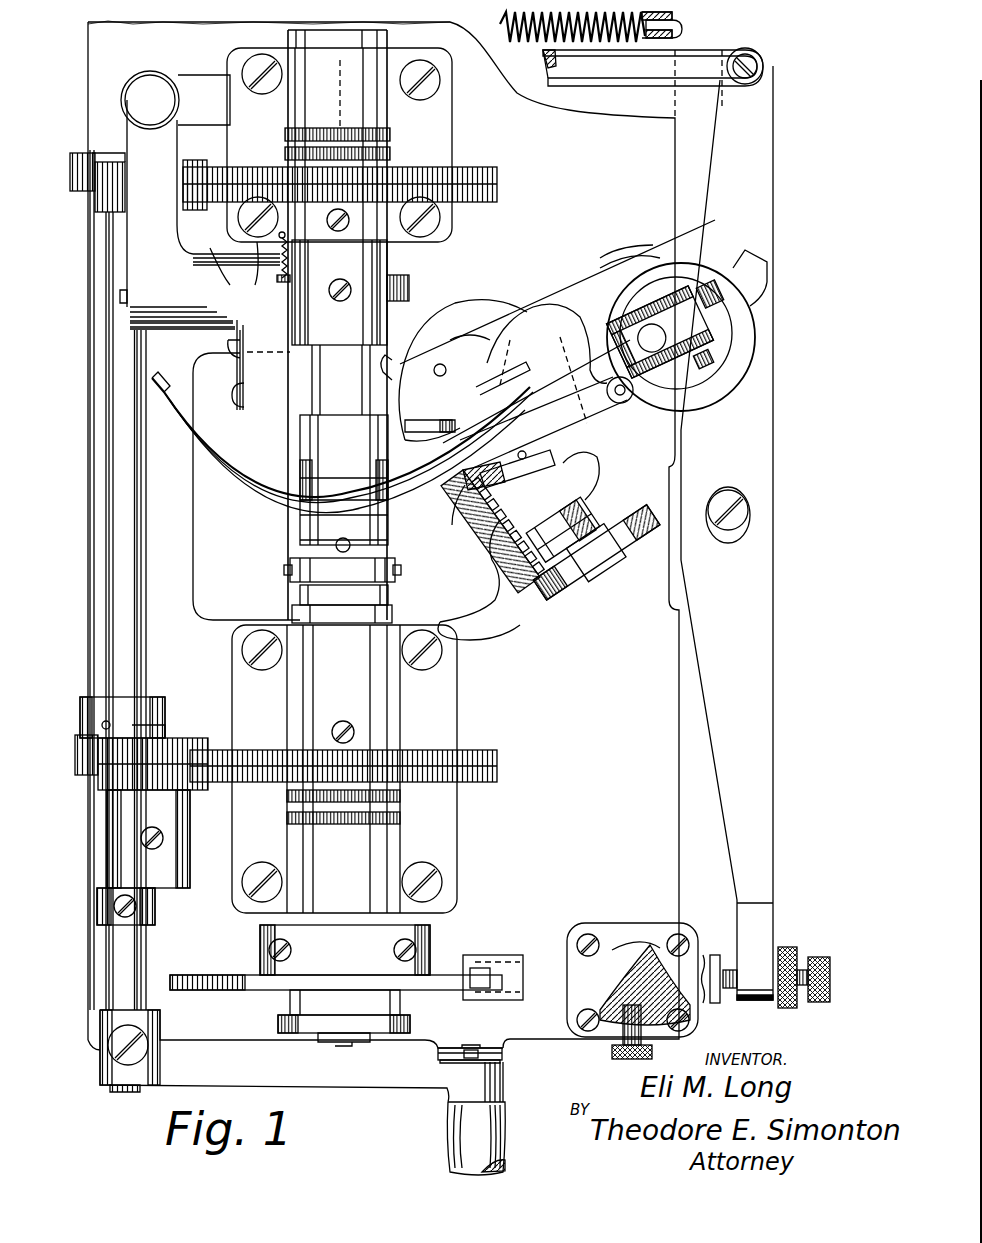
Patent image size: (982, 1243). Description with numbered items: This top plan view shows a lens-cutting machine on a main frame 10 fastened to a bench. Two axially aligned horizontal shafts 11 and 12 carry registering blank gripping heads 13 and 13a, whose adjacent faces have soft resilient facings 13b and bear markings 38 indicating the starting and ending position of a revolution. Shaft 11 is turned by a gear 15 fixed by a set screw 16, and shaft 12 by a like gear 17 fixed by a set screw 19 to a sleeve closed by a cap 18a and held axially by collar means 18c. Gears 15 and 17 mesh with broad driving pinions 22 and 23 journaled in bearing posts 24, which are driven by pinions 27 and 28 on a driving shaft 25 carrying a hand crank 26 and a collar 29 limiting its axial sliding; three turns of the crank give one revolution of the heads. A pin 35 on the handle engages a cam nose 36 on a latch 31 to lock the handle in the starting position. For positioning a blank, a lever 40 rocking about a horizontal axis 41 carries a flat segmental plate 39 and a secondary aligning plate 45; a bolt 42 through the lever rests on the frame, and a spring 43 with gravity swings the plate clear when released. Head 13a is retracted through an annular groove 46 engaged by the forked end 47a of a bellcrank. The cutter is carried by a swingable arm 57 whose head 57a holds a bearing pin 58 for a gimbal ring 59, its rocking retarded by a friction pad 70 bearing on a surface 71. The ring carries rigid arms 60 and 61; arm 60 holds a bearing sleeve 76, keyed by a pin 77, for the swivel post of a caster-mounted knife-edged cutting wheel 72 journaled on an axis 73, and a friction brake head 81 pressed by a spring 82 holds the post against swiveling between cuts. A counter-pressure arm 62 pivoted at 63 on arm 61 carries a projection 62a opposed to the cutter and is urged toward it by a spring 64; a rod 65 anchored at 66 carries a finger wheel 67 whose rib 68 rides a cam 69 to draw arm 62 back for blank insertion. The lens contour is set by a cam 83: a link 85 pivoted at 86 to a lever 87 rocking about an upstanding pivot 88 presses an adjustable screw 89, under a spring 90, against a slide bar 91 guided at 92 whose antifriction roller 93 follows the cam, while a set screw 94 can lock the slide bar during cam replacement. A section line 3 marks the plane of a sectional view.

The main frame 10 is at (118, 78).
The shaft 11 is at (380, 33).
The shaft 12 is at (320, 604).
The blank gripping head 13 is at (330, 448).
The blank gripping head 13a is at (388, 540).
The resilient facings 13b is at (302, 490).
The gear 15 is at (480, 212).
The set screw 16 is at (350, 222).
The gear 17 is at (470, 760).
The cap structure 18a is at (350, 1045).
The collar means 18c is at (352, 625).
The set screw 19 is at (355, 730).
The driving pinion 22 is at (110, 200).
The driving pinion 23 is at (112, 772).
The bearing posts 24 is at (118, 283).
The driving shaft 25 is at (112, 565).
The hand crank 26 is at (102, 1066).
The pinion 27 is at (75, 170).
The pinion 28 is at (82, 728).
The collar 29 is at (97, 912).
The latch 31 is at (438, 1052).
The pin 35 is at (478, 1045).
The cam nose 36 is at (465, 1045).
The markings 38 is at (365, 512).
The segmental plate 39 is at (240, 462).
The lever 40 is at (240, 258).
The horizontal axis 41 is at (400, 272).
The bolt 42 is at (150, 98).
The spring 43 is at (250, 268).
The secondary positioning plate 45 is at (240, 380).
The annular groove 46 is at (388, 592).
The forked end 47a is at (288, 566).
The arm 57 is at (565, 360).
The fixed head 57a is at (660, 255).
The bearing pin 58 is at (705, 355).
The gimbal ring 59 is at (730, 380).
The arm 60 is at (524, 325).
The arm 61 is at (575, 468).
The counter pressure arm 62 is at (578, 430).
The pressure projection 62a is at (500, 535).
The pivot 63 is at (625, 435).
The spring 64 is at (560, 560).
The rod 65 is at (509, 470).
The anchor point 66 is at (526, 457).
The finger wheel 67 is at (593, 547).
The rib 68 is at (588, 513).
The cam 69 is at (561, 514).
The friction pad 70 is at (725, 365).
The friction surface 71 is at (664, 341).
The cutting wheel 72 is at (440, 432).
The wheel axis 73 is at (476, 410).
The bearing sleeve 76 is at (440, 376).
The key or pin 77 is at (446, 370).
The friction brake head 81 is at (392, 378).
The spring 82 is at (455, 280).
The cam 83 is at (220, 975).
The link 85 is at (620, 86).
The pivot 86 is at (752, 88).
The lever 87 is at (775, 630).
The upstanding pivot 88 is at (752, 530).
The adjustable screw 89 is at (740, 995).
The spring 90 is at (536, 34).
The slide bar 91 is at (712, 956).
The guide 92 is at (625, 950).
The antifriction roller 93 is at (470, 975).
The set screw 94 is at (652, 1050).
The section line 3 is at (365, 72).